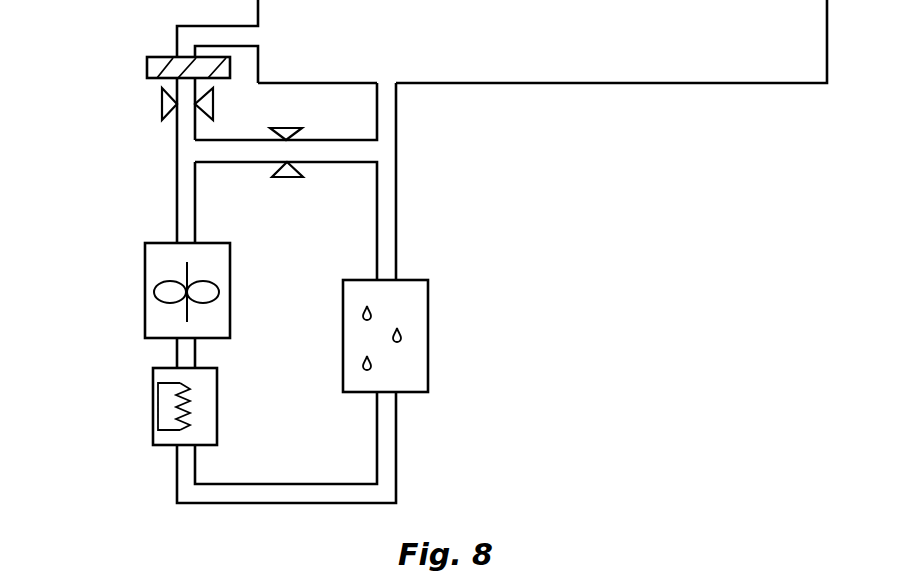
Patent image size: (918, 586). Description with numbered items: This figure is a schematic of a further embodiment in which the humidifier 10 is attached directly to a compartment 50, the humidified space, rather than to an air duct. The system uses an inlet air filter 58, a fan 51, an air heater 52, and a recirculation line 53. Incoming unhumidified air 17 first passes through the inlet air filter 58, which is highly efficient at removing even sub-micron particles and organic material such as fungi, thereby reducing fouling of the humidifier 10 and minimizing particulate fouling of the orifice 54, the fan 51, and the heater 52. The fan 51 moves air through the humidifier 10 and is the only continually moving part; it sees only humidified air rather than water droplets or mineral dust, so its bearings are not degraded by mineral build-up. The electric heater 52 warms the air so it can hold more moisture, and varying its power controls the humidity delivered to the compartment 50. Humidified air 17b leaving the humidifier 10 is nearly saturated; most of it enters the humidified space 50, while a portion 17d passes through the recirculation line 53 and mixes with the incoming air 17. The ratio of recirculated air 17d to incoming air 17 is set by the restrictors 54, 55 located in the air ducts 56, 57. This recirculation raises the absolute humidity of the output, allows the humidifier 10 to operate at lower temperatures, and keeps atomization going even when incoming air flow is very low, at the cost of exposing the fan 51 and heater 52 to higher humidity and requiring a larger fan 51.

The humidifier 10 is at (428, 347).
The incoming unhumidified air 17 is at (235, 37).
The humidified air 17b is at (387, 28).
The recirculated portion of humidified air 17d is at (357, 151).
The compartment 50 is at (560, 85).
The fan 51 is at (145, 305).
The air heater 52 is at (158, 405).
The recirculation line 53 is at (362, 163).
The restrictor 54 is at (162, 112).
The restrictor 55 is at (285, 177).
The air duct 56 is at (347, 140).
The air duct 57 is at (200, 131).
The inlet air filter 58 is at (147, 68).